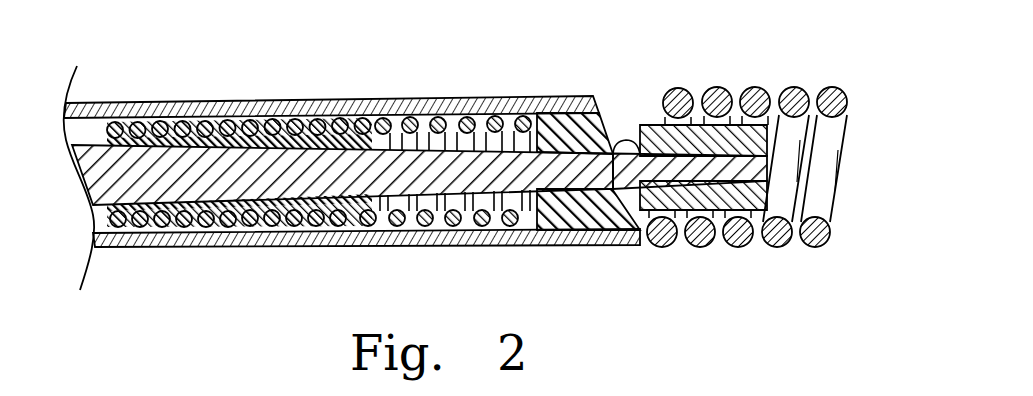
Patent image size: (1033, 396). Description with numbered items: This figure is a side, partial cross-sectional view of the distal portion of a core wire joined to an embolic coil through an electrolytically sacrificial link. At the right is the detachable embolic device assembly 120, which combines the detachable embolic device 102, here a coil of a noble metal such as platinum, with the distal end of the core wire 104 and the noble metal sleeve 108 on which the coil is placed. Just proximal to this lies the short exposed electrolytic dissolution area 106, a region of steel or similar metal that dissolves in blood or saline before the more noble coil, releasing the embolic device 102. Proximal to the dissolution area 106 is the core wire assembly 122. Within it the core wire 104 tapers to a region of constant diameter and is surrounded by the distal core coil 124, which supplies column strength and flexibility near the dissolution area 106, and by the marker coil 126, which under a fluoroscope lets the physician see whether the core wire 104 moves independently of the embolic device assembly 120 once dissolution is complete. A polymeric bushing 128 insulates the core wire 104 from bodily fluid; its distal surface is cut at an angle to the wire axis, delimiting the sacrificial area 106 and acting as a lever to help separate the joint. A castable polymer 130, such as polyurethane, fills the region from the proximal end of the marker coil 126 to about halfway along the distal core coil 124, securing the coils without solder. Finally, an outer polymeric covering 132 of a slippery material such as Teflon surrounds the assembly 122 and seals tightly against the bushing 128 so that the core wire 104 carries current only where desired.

The detachable embolic device 102 is at (853, 111).
The core wire 104 is at (701, 214).
The electrolytic dissolution area 106 is at (632, 140).
The noble metal sleeve 108 is at (692, 178).
The detachable embolic device assembly 120 is at (853, 80).
The core wire assembly 122 is at (593, 82).
The distal core coil 124 is at (400, 242).
The marker coil 126 is at (188, 246).
The bushing 128 is at (589, 244).
The castable polymer 130 is at (263, 246).
The outer polymeric covering 132 is at (122, 250).